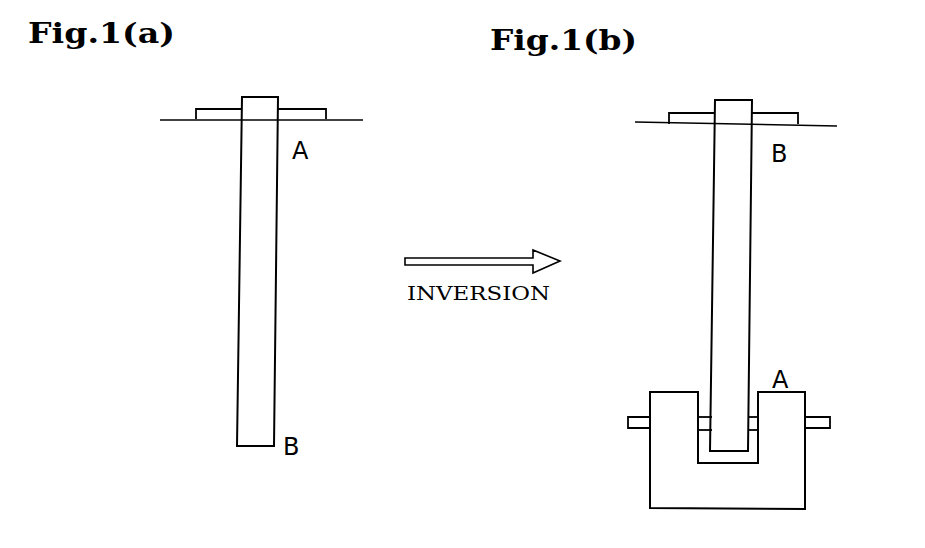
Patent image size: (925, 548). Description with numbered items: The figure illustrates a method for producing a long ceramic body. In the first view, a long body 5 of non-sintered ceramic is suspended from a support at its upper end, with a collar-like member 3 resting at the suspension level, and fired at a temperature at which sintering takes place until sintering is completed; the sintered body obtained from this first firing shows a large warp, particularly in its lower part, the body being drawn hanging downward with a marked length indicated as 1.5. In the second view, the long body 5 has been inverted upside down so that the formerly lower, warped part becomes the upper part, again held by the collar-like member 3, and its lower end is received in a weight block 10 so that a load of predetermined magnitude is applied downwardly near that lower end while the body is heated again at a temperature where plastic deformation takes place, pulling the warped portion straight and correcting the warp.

In FIG. 1A, the flange / collar at ground level 3 is at (298, 109).
In FIG. 1B, the flange / collar at ground level 3 is at (773, 113).
In FIG. 1A, the rod (bar) of length 1.5 is at (277, 283).
In FIG. 1B, the long body 5 is at (752, 223).
In FIG. 1B, the U-shaped receiving block 10 is at (805, 470).